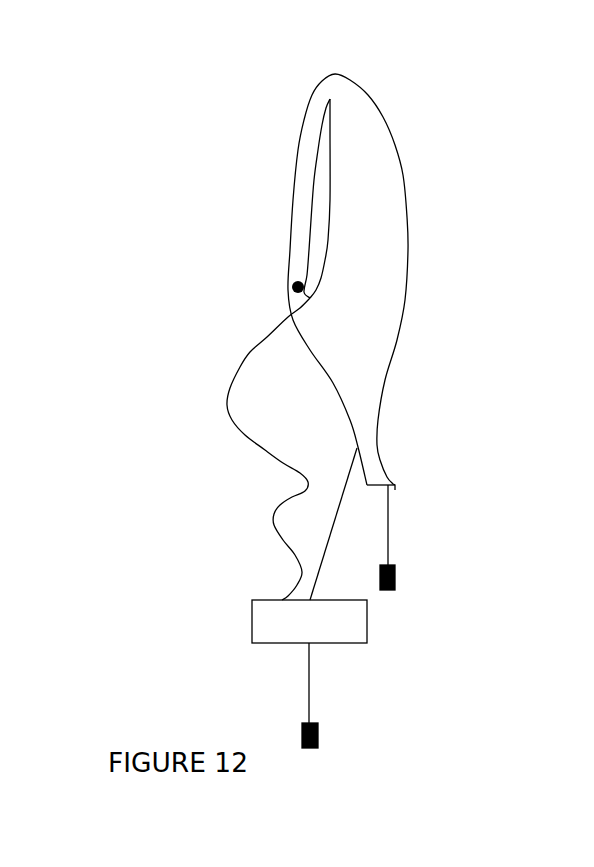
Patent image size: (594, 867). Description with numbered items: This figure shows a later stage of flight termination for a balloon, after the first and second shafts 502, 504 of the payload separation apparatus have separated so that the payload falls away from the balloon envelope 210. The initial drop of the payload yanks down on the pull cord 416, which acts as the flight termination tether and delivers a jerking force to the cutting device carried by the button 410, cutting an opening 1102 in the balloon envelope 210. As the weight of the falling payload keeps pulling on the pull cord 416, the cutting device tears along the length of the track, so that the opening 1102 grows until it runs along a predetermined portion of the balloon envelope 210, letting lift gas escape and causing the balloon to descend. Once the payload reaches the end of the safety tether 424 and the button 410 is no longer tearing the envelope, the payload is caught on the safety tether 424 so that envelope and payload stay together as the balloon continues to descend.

The balloon envelope 210 is at (347, 78).
The opening 1102 is at (328, 207).
The button 410 is at (310, 298).
The pull cord 416 is at (283, 463).
The safety tether 424 is at (333, 527).
The first shaft 502 is at (318, 730).
The second shaft 504 is at (395, 572).